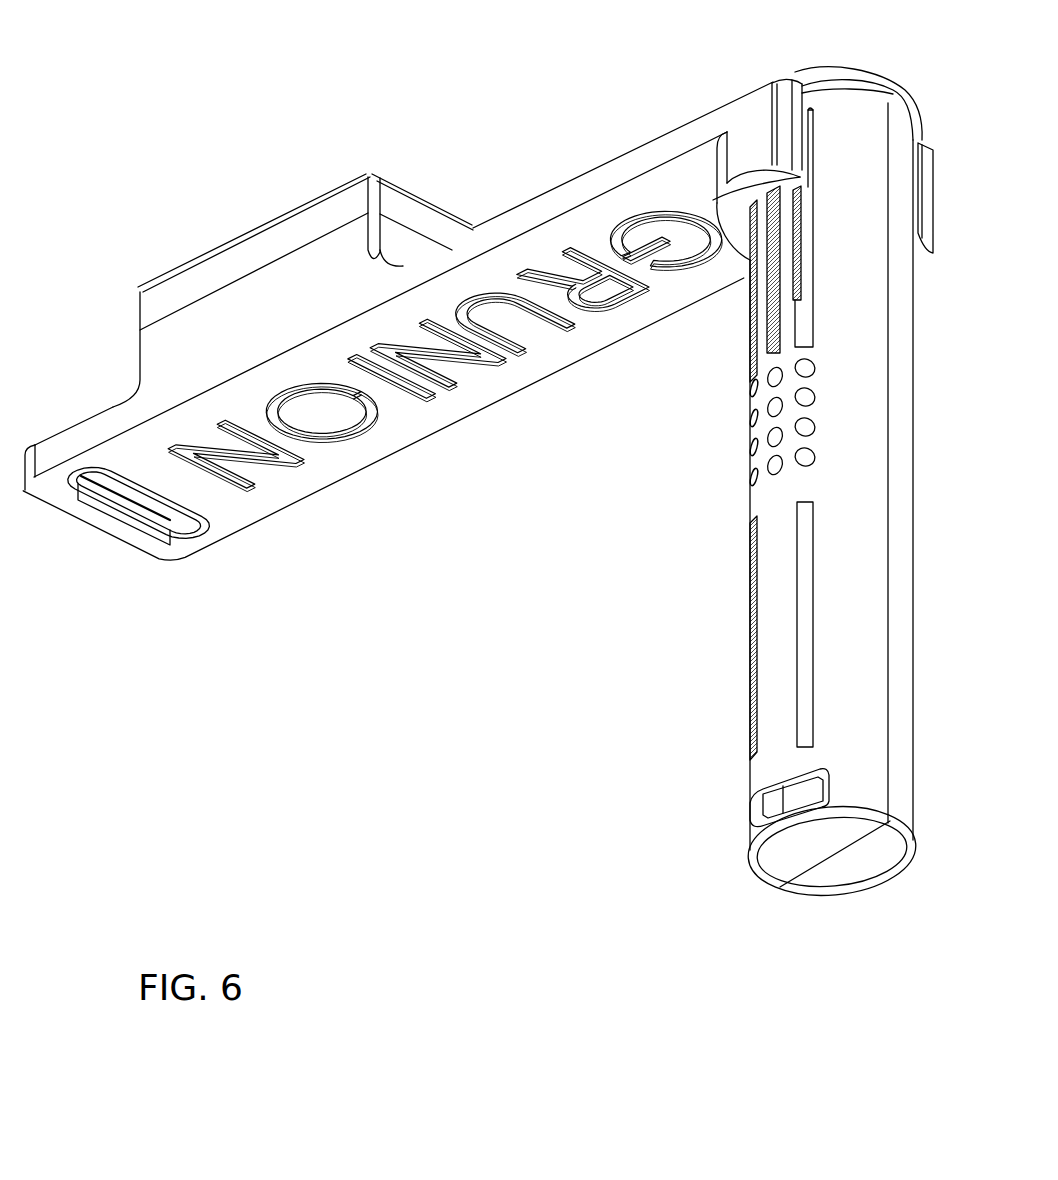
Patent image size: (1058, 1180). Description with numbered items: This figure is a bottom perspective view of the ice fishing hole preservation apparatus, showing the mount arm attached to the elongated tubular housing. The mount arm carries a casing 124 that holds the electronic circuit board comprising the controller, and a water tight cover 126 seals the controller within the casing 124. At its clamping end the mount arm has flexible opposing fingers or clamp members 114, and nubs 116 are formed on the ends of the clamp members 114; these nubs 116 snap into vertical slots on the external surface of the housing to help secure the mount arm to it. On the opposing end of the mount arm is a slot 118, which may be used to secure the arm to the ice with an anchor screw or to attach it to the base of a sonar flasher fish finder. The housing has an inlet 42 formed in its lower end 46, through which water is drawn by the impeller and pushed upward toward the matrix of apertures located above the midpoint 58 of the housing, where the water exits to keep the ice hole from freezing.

The mounting arm 114 is at (738, 110).
The flange wall 126 is at (275, 242).
The wall face 124 is at (178, 351).
The slot 118 is at (120, 500).
The slot 116 is at (800, 183).
The housing 58 is at (743, 556).
The window 42 is at (775, 810).
The end cap 46 is at (838, 883).